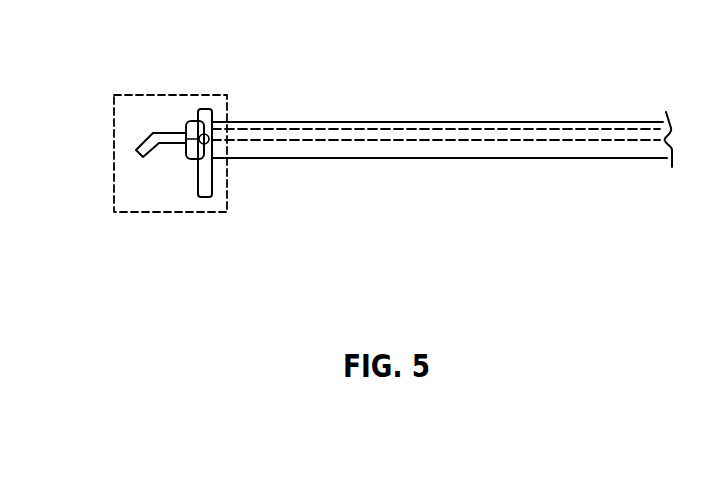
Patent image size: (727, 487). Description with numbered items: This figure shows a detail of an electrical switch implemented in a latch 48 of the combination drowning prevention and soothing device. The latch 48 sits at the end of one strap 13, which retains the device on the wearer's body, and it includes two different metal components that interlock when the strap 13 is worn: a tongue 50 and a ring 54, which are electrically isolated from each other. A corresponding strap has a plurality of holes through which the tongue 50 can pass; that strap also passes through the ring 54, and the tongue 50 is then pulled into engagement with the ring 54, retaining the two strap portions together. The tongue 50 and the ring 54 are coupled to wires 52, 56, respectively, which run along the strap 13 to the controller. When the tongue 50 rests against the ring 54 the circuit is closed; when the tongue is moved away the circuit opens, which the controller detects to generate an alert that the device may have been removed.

The strap 13 is at (428, 158).
The latch 48 is at (168, 93).
The tongue 50 is at (146, 137).
The wire 52 is at (310, 128).
The ring 54 is at (200, 192).
The wire 56 is at (342, 140).